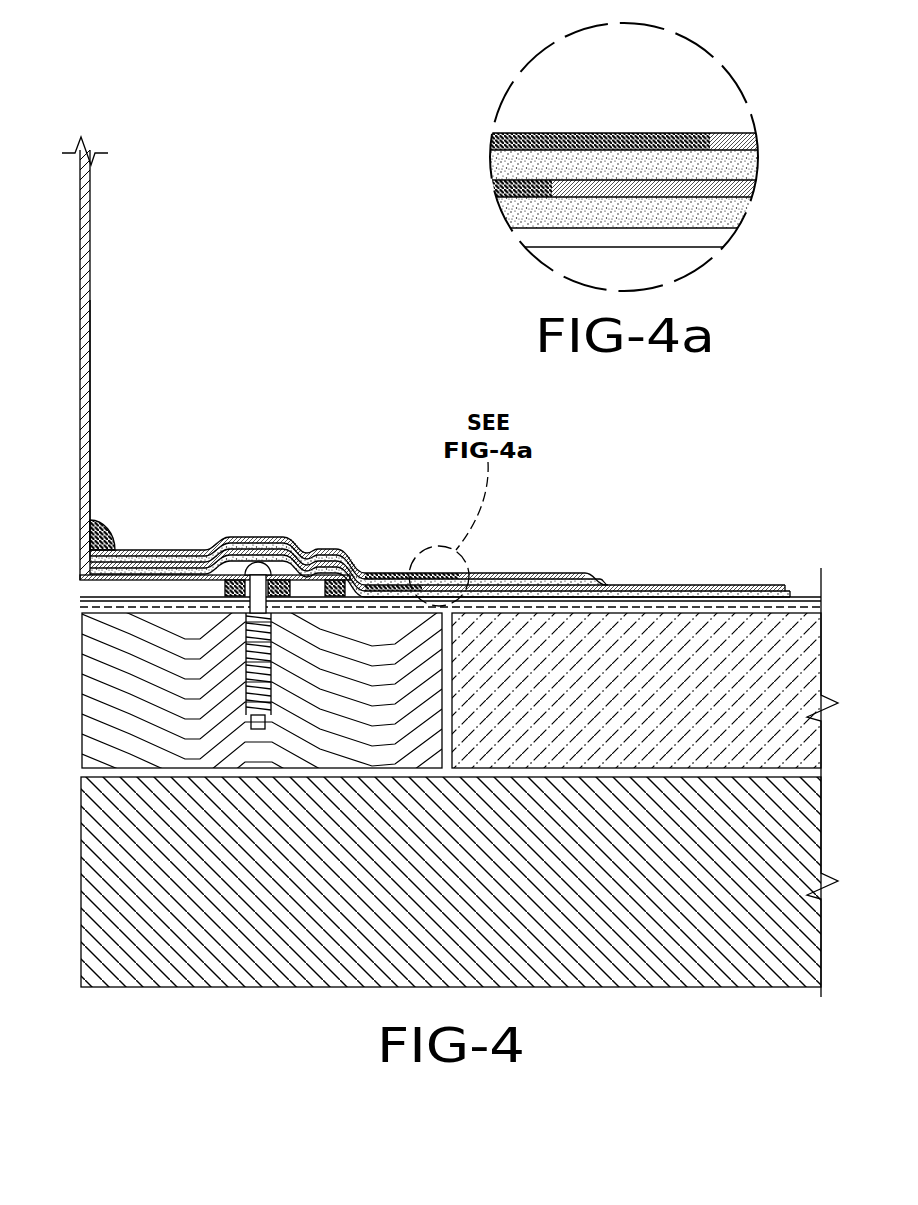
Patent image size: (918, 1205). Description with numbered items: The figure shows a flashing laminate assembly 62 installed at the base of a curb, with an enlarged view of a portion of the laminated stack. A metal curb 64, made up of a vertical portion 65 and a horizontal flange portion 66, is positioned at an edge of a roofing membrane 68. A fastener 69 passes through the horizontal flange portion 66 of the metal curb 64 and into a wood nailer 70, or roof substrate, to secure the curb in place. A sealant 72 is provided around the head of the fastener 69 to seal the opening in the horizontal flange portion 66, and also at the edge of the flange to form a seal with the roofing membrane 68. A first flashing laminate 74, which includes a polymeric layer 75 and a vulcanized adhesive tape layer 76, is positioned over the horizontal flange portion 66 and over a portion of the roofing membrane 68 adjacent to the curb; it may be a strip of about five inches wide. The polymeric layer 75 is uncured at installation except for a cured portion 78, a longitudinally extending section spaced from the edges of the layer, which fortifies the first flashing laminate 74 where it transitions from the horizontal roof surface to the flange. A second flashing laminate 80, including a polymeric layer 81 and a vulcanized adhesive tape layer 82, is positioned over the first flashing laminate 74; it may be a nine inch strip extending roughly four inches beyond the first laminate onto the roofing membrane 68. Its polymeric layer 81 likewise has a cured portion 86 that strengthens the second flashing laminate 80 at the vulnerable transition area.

In FIG. 4, the flashing laminate assembly 62 is at (246, 433).
In FIG. 4, the metal curb 64 is at (93, 255).
In FIG. 4, the vertical portion 65 is at (86, 347).
In FIG. 4, the horizontal flange portion 66 is at (127, 578).
In FIG. 4, the roofing membrane 68 is at (807, 597).
In FIG. 4A, the roofing membrane 68 is at (570, 236).
In FIG. 4, the fastener 69 is at (248, 667).
In FIG. 4, the wood nailer 70 is at (120, 725).
In FIG. 4, the sealant 72 is at (245, 588).
In FIG. 4, the first flashing laminate 74 is at (490, 612).
In FIG. 4, the polymeric layer 75 is at (530, 592).
In FIG. 4A, the polymeric layer 75 is at (733, 182).
In FIG. 4, the vulcanized adhesive tape layer 76 is at (548, 597).
In FIG. 4A, the vulcanized adhesive tape layer 76 is at (722, 210).
In FIG. 4, the cured portion 78 is at (381, 596).
In FIG. 4A, the cured portion 78 is at (512, 186).
In FIG. 4, the second flashing laminate 80 is at (636, 582).
In FIG. 4, the polymeric layer 81 is at (700, 584).
In FIG. 4A, the polymeric layer 81 is at (740, 141).
In FIG. 4, the vulcanized adhesive tape layer 82 is at (700, 590).
In FIG. 4A, the vulcanized adhesive tape layer 82 is at (512, 166).
In FIG. 4, the cured portion 86 is at (372, 580).
In FIG. 4A, the cured portion 86 is at (506, 136).